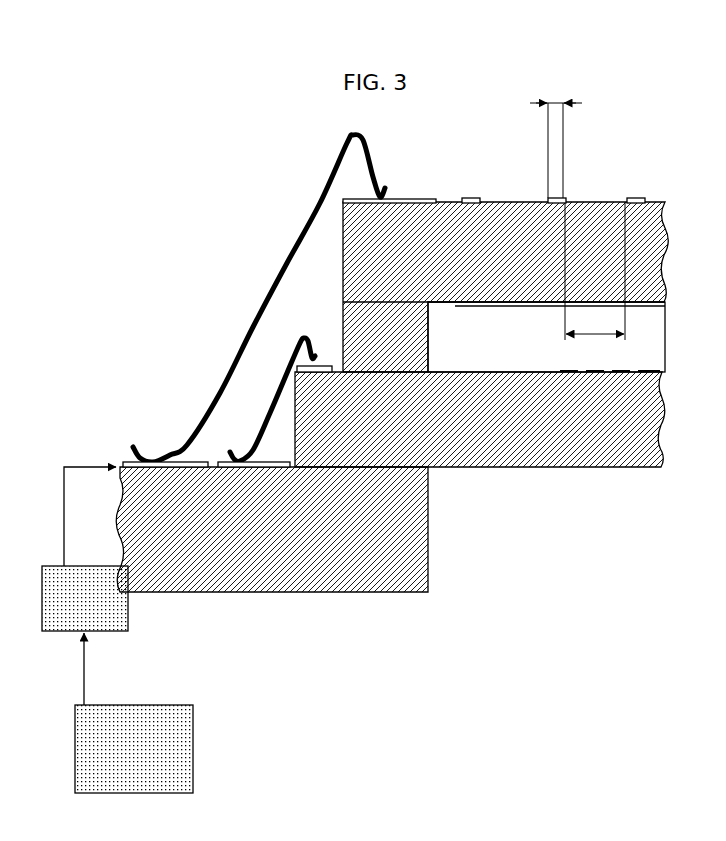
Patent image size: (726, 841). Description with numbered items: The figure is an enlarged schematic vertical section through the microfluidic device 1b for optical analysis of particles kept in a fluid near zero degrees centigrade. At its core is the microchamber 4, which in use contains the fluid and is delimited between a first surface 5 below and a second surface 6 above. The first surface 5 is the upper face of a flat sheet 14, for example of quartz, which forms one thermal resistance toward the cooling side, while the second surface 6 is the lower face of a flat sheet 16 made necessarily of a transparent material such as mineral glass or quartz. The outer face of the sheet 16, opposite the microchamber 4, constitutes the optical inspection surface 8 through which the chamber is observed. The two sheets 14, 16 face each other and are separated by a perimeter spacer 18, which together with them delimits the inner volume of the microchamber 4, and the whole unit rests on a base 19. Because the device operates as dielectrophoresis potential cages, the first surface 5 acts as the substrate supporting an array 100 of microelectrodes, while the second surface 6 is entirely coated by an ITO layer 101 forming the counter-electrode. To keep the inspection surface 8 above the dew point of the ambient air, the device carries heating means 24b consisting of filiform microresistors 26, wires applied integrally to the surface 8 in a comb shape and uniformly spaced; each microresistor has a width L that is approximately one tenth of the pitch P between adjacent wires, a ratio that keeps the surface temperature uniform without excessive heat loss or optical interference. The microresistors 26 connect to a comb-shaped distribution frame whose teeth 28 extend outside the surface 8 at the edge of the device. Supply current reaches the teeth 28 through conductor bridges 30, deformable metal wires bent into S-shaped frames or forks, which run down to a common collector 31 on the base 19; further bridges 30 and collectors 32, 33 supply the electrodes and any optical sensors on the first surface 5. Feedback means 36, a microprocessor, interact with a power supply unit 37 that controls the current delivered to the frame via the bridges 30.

The device for performing optical analysis of particles 1b is at (631, 104).
The microchamber 4 is at (632, 340).
The first surface 5 is at (536, 376).
The second surface 6 is at (645, 313).
The optical inspection surface 8 is at (597, 201).
The flat sheet 14 is at (607, 442).
The flat sheet 16 is at (647, 238).
The perimeter spacer 18 is at (410, 330).
The base 19 is at (430, 522).
The means to heat the optical inspection surface 24b is at (496, 200).
The filiform microresistors 26 is at (470, 198).
The teeth 28 is at (401, 199).
The conductor bridges 30 is at (249, 301).
The common collector 31 is at (187, 467).
The collector 32 is at (263, 467).
The collector 33 is at (318, 366).
The means to operate in feedback the heating means 36 is at (185, 720).
The power supply unit 37 is at (116, 612).
The array of microelectrodes 100 is at (627, 367).
The ITO layer 101 is at (503, 310).
The width L is at (556, 137).
The pitch P is at (595, 325).